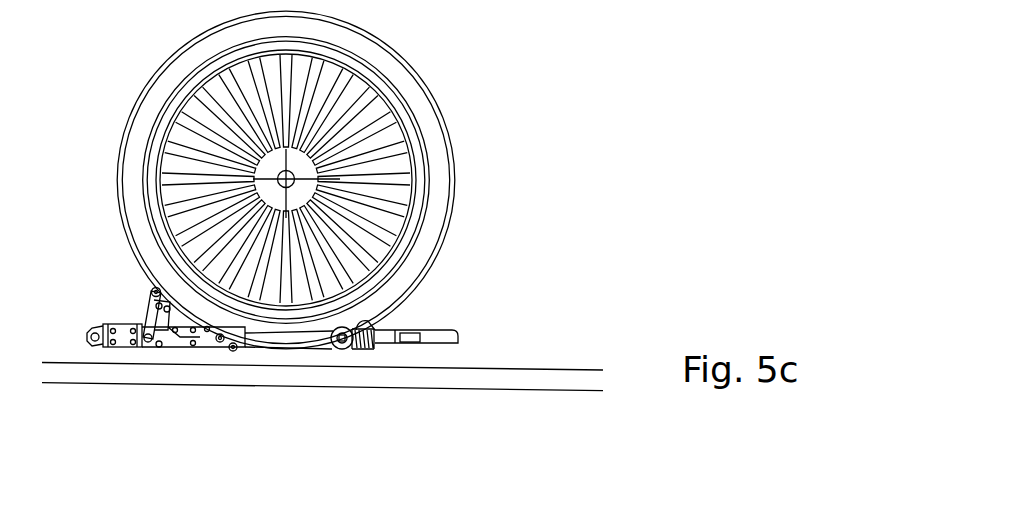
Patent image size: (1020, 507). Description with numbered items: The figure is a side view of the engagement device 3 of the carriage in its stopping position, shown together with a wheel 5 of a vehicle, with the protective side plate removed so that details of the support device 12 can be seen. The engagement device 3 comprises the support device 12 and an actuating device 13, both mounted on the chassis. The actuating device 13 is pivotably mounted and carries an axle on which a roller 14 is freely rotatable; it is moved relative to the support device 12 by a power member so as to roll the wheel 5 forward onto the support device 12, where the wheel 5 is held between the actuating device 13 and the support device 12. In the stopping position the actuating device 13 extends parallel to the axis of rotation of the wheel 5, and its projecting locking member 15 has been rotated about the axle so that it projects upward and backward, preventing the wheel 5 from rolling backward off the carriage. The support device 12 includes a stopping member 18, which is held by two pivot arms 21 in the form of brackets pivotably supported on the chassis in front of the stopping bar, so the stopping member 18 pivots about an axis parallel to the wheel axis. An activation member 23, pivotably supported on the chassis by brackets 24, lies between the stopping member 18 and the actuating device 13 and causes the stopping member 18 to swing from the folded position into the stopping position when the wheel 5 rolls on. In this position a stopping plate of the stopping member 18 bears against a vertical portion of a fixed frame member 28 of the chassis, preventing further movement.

The wheel 5 is at (372, 48).
The stopping member 18 is at (151, 290).
The pivot arms 21 is at (150, 313).
The fixed frame member 28 is at (123, 335).
The support device 12 is at (170, 345).
The brackets 24 is at (218, 342).
The activation member 23 is at (232, 351).
The engagement device 3 is at (334, 350).
The actuating device 13 is at (343, 347).
The roller 14 is at (363, 348).
The locking member 15 is at (380, 323).